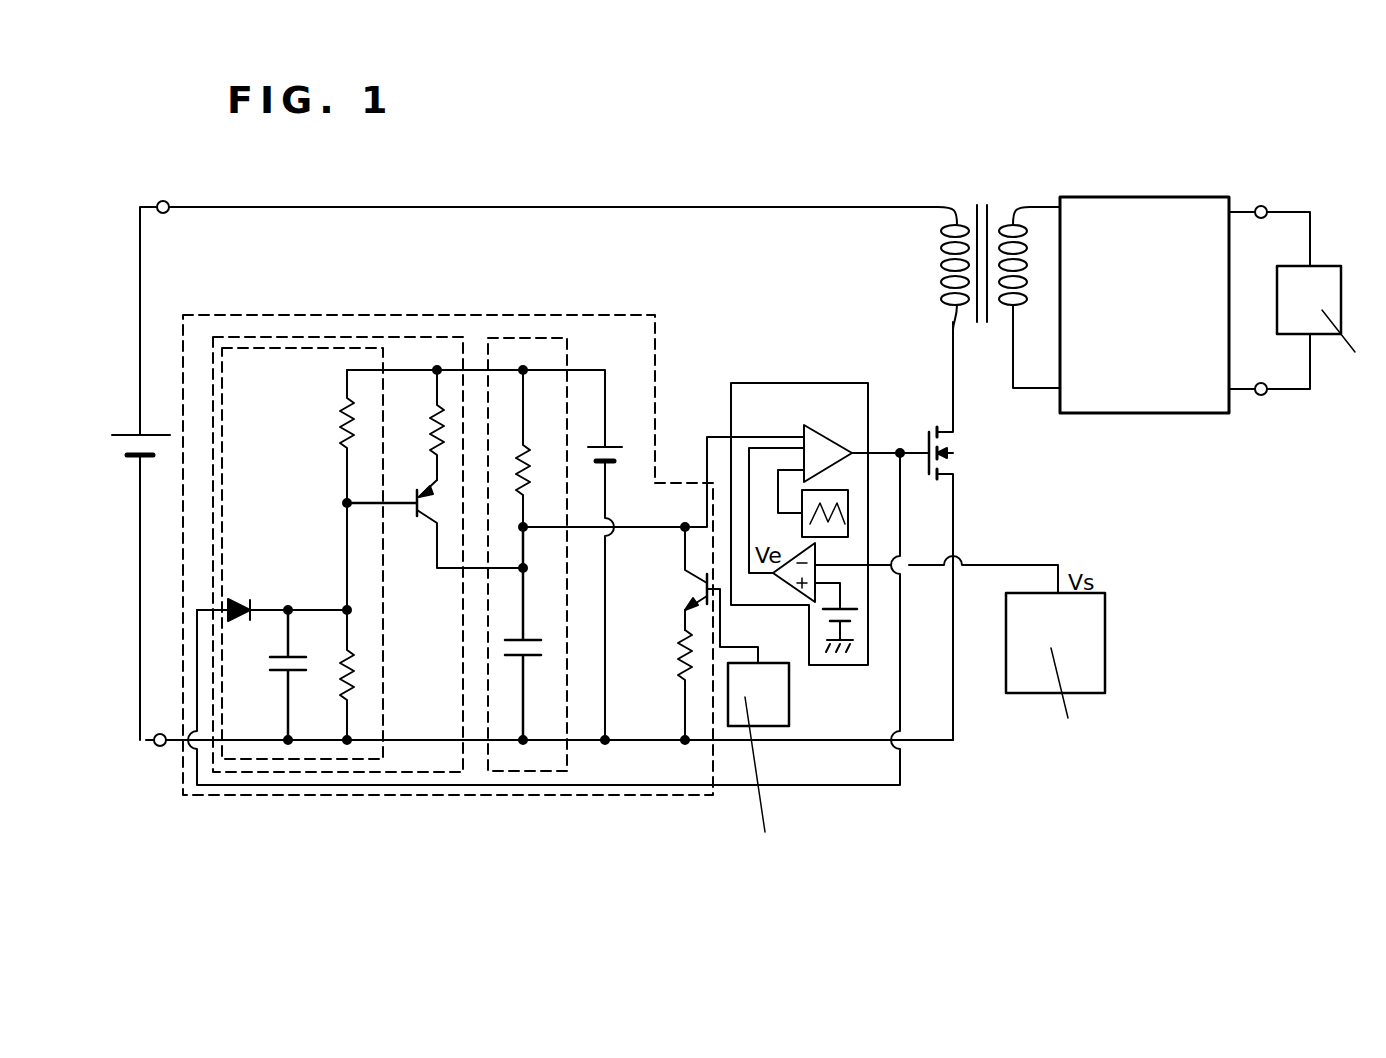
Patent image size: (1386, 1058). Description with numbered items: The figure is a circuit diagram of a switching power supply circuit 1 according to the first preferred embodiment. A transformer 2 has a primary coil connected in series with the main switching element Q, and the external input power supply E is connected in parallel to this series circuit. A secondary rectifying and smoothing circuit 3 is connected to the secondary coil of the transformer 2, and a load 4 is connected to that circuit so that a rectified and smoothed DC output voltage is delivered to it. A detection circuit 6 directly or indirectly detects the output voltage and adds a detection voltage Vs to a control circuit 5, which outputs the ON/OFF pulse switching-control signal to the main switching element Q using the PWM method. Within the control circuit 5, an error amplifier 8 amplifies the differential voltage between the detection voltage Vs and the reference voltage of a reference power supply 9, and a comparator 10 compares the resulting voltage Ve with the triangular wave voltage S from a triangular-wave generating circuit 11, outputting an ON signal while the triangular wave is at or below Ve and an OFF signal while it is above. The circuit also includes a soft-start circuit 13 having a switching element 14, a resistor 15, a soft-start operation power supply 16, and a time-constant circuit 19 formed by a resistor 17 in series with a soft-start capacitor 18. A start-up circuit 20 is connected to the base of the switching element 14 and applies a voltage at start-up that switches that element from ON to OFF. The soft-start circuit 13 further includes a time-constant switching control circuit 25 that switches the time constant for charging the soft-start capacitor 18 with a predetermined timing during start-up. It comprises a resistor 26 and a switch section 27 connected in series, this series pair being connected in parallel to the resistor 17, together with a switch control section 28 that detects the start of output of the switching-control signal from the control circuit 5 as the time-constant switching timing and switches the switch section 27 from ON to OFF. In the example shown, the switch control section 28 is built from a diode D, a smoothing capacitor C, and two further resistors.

The switching power supply circuit 1 is at (937, 132).
The transformer 2 is at (976, 270).
The secondary rectifying and smoothing circuit 3 is at (1140, 205).
The load 4 is at (1322, 272).
The control circuit 5 is at (787, 383).
The detection circuit 6 is at (1090, 648).
The error amplifier 8 is at (786, 578).
The reference power supply 9 is at (855, 609).
The comparator 10 is at (820, 440).
The triangular-wave generating circuit 11 is at (840, 478).
The soft-start circuit 13 is at (395, 315).
The switching element 14 is at (692, 585).
The resistor 15 is at (680, 650).
The soft-start operation power supply 16 is at (622, 447).
The resistor 17 is at (522, 455).
The soft-start capacitor 18 is at (528, 640).
The time-constant circuit 19 is at (540, 336).
The start-up circuit 20 is at (790, 704).
The time-constant switching control circuit 25 is at (258, 337).
The resistor 26 is at (437, 420).
The switch section 27 is at (428, 522).
The switch control section 28 is at (385, 625).